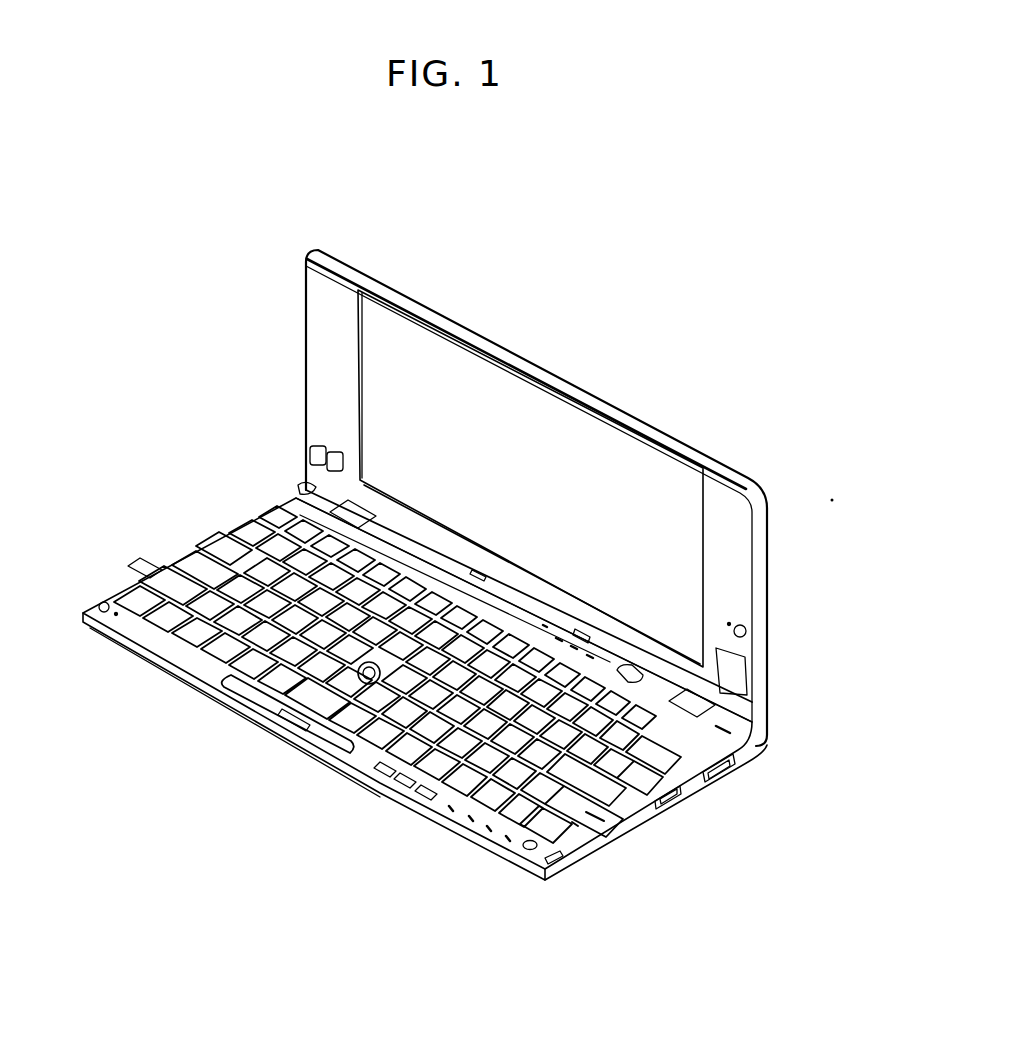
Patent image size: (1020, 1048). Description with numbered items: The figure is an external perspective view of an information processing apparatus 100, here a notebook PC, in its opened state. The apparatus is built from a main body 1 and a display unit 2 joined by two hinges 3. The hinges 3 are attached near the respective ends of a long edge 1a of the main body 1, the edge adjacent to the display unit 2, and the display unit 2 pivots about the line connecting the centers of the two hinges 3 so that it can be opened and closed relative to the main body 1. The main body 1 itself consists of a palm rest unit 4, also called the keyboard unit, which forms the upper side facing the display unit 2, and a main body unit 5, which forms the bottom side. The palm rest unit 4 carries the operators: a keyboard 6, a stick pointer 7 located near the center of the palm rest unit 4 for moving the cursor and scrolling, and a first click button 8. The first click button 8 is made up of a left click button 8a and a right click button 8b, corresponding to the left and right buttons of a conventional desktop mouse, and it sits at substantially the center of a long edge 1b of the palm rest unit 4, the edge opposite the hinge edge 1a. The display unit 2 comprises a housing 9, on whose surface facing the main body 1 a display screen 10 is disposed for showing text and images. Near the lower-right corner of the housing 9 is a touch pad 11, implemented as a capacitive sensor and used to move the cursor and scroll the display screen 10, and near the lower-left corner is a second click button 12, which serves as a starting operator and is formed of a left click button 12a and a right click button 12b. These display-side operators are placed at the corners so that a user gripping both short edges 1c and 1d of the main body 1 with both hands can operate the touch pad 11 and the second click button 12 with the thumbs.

The information processing apparatus 100 is at (566, 210).
The main body 1 is at (576, 960).
The long edge 1a is at (470, 570).
The long edge 1b is at (178, 672).
The short edge 1c is at (600, 840).
The short edge 1d is at (188, 550).
The display unit 2 is at (304, 341).
The hinges 3 is at (332, 511).
The palm rest unit 4 is at (566, 862).
The main body unit 5 is at (533, 870).
The keyboard 6 is at (600, 778).
The stick pointer 7 is at (365, 688).
The first click button 8 is at (186, 742).
The left click button 8a is at (262, 694).
The right click button 8b is at (328, 733).
The housing 9 is at (727, 542).
The display screen 10 is at (660, 478).
The touch pad 11 is at (740, 648).
The second click button 12 is at (222, 412).
The left click button 12a is at (312, 446).
The right click button 12b is at (326, 458).